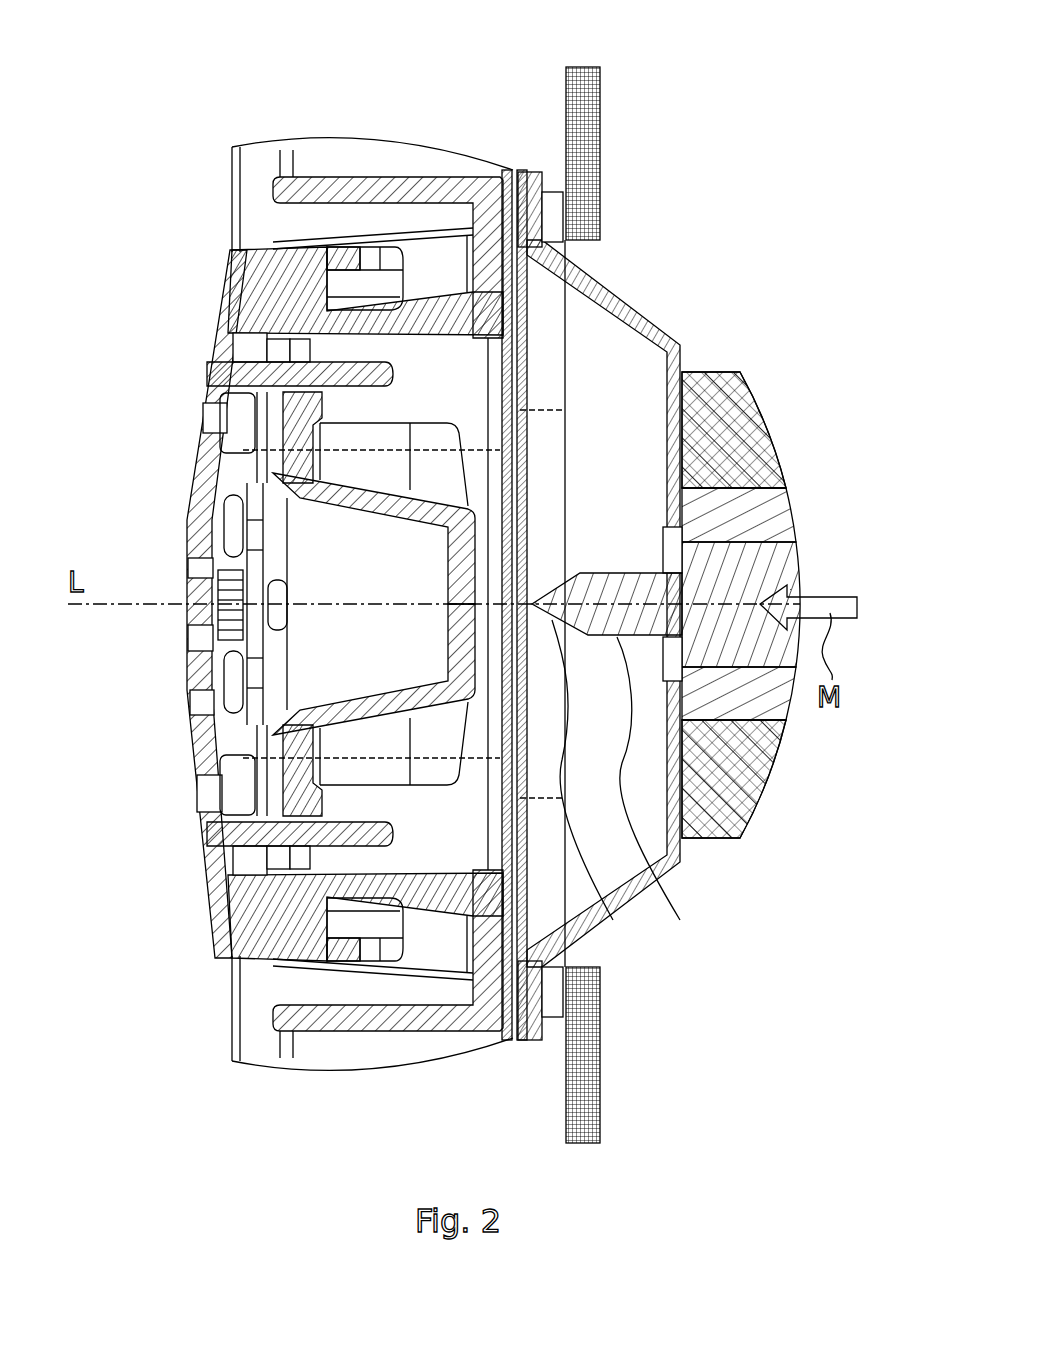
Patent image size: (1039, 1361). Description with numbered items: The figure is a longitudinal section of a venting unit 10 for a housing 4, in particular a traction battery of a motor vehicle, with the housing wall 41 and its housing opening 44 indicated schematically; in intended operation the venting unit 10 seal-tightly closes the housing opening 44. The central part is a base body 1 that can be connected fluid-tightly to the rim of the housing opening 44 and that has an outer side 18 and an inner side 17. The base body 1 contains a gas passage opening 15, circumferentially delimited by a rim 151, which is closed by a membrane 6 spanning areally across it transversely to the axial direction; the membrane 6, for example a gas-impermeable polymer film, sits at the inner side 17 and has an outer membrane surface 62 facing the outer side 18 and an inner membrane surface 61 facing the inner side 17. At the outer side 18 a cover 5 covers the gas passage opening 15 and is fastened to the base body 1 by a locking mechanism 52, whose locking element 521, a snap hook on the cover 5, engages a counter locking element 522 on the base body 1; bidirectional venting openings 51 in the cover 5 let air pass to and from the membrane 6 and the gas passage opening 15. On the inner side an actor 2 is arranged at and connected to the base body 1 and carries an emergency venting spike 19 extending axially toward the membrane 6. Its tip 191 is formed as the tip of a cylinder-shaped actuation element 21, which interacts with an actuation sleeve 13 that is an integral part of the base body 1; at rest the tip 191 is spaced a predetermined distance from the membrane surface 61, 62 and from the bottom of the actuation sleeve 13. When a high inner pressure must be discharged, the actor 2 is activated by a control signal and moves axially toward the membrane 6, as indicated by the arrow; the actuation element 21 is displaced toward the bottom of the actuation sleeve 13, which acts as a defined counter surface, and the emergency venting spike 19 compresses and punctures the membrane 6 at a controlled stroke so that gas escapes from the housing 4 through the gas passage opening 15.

The venting unit 10 is at (91, 93).
The base body 1 is at (412, 177).
The housing 4 is at (643, 605).
The housing wall 41 is at (602, 143).
The housing opening 44 is at (607, 234).
The inner side 17 is at (680, 256).
The outer membrane surface 62 is at (528, 373).
The actor 2 is at (685, 625).
The membrane 6 is at (525, 467).
The rim 151 is at (498, 323).
The gas passage opening 15 is at (492, 372).
The bidirectional venting openings 51 is at (205, 407).
The inner membrane surface 61 is at (513, 397).
The cover 5 is at (192, 524).
The actuation sleeve 13 is at (278, 723).
The counter locking element 522 is at (360, 803).
The locking mechanism 52 is at (368, 815).
The locking element 521 is at (365, 828).
The outer side 18 is at (218, 988).
The actuation element 21 is at (743, 640).
The emergency venting spike 19 is at (655, 905).
The tip 191 is at (597, 880).